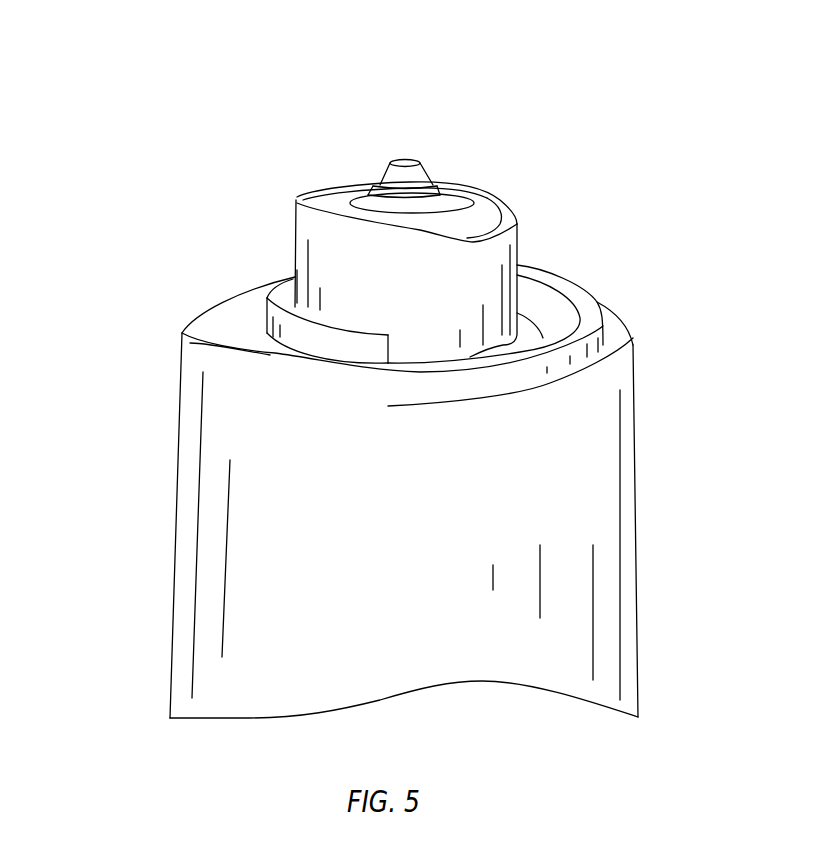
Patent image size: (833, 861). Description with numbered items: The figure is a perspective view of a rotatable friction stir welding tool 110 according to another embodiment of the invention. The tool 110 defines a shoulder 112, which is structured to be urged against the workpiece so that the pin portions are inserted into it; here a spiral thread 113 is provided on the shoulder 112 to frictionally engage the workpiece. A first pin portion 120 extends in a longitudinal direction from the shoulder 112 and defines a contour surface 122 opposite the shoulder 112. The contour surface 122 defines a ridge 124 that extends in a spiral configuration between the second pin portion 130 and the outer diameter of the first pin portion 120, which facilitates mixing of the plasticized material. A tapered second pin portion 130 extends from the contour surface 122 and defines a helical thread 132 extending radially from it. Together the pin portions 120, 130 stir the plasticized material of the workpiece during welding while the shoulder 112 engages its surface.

The friction stir welding tool 110 is at (722, 146).
The shoulder 112 is at (620, 338).
The spiral thread 113 is at (593, 293).
The first pin portion 120 is at (300, 258).
The contour surface 122 is at (512, 220).
The ridge 124 is at (467, 190).
The second pin portion 130 is at (407, 161).
The helical thread 132 is at (388, 178).